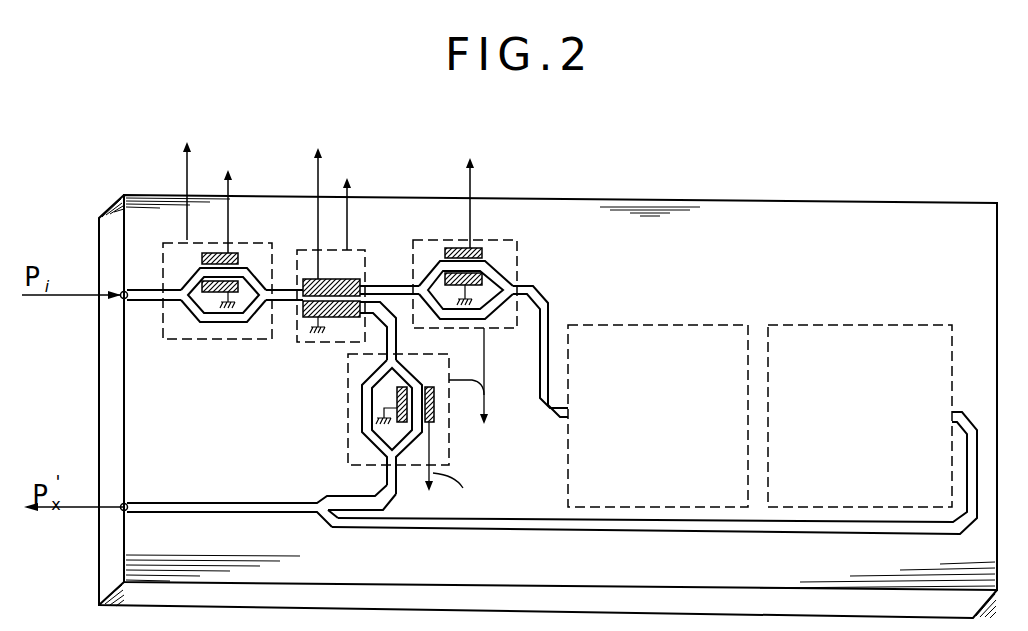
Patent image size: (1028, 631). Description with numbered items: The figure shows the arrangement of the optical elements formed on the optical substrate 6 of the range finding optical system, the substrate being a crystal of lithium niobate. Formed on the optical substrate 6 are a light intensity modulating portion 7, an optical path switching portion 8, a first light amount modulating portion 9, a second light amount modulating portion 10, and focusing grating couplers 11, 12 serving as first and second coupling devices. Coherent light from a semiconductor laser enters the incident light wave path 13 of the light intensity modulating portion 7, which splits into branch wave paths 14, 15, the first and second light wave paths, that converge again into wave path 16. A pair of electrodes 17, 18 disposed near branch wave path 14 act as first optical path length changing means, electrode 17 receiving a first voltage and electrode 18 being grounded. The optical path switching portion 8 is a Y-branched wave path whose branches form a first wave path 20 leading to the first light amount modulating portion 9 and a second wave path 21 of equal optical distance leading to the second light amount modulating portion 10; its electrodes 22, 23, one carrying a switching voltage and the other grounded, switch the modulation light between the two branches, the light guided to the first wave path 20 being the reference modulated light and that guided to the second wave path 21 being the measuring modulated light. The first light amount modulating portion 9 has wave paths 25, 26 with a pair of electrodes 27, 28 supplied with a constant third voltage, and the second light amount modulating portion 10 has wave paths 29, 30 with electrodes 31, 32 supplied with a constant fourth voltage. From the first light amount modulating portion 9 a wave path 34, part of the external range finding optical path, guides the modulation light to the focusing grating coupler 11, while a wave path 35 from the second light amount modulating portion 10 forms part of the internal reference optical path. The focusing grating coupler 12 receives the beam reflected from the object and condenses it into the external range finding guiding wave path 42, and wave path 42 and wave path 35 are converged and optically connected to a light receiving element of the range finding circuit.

The optical substrate 6 is at (752, 203).
The light intensity modulating portion 7 is at (232, 342).
The optical path switching portion 8 is at (316, 343).
The first light amount modulating portion 9 is at (517, 262).
The second light amount modulating portion 10 is at (348, 440).
The focusing grating coupler 11 is at (706, 325).
The focusing grating coupler 12 is at (886, 325).
The incident light wave path 13 is at (141, 296).
The branch wave path 14 is at (195, 272).
The branch wave path 15 is at (222, 322).
The wave path 16 is at (288, 287).
The electrode 17 is at (209, 252).
The electrode 18 is at (210, 294).
The first wave path 20 is at (376, 285).
The second wave path 21 is at (383, 322).
The electrode 22 is at (343, 280).
The electrode 23 is at (307, 318).
The wave path 25 is at (494, 272).
The wave path 26 is at (497, 308).
The electrode 27 is at (452, 247).
The electrode 28 is at (470, 276).
The wave path 29 is at (412, 438).
The wave path 30 is at (376, 446).
The electrode 31 is at (435, 405).
The electrode 32 is at (396, 393).
The wave path 34 is at (549, 313).
The wave path 35 is at (387, 497).
The external range finding guiding wave path 42 is at (906, 524).